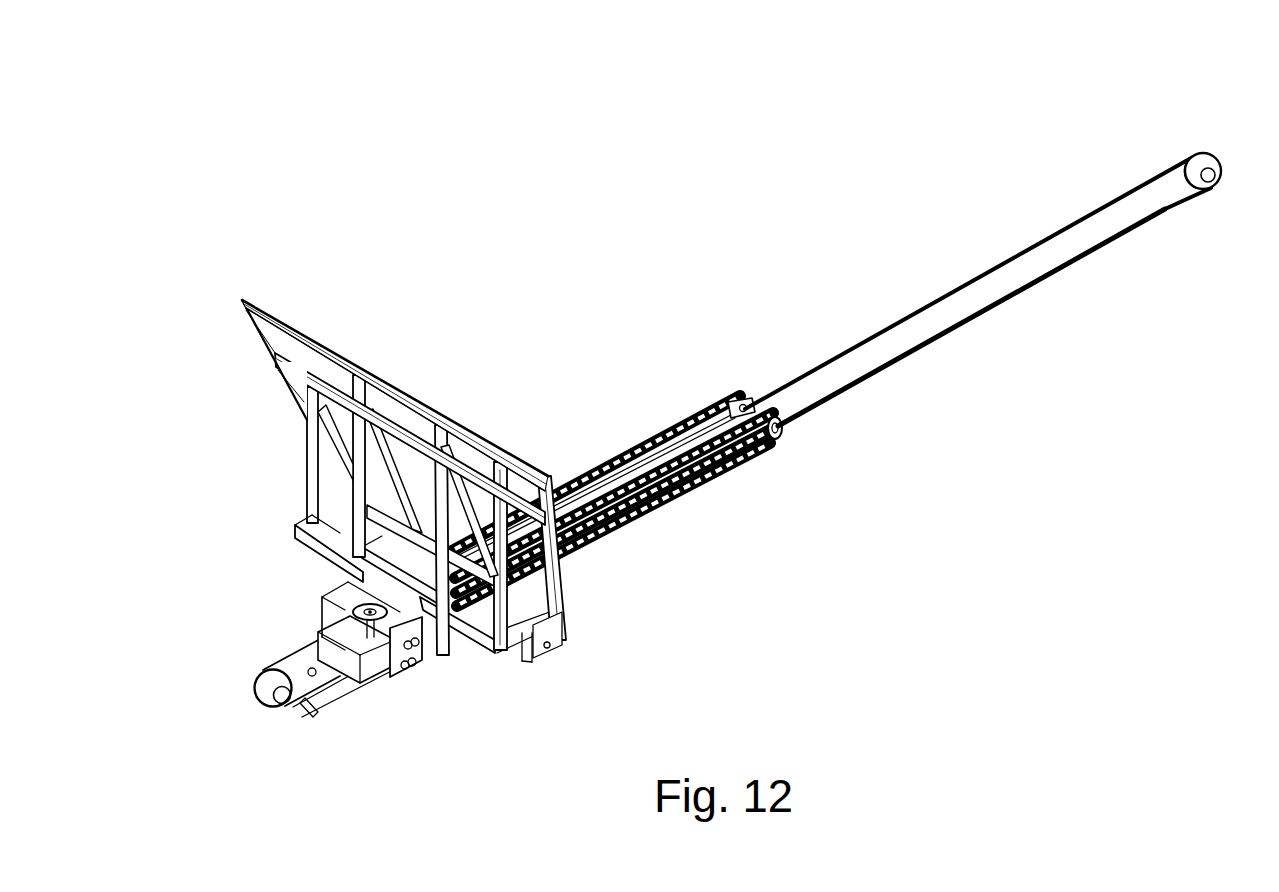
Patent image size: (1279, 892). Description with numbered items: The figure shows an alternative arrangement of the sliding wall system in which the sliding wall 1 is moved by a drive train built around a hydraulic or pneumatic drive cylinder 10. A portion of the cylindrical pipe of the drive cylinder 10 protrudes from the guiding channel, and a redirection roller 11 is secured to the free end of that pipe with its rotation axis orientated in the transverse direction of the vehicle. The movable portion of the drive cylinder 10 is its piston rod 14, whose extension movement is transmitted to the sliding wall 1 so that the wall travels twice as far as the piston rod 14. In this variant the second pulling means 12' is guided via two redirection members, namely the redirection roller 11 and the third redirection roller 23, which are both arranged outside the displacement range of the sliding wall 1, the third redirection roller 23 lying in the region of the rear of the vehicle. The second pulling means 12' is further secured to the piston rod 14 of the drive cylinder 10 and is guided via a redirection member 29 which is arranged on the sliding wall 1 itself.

The sliding wall 1 is at (372, 370).
The drive cylinder 10 is at (690, 450).
The redirection roller 11 is at (266, 708).
The second pulling means 12' is at (978, 286).
The piston rod 14 is at (727, 405).
The third redirection roller 23 is at (1213, 157).
The redirection member 29 is at (360, 606).